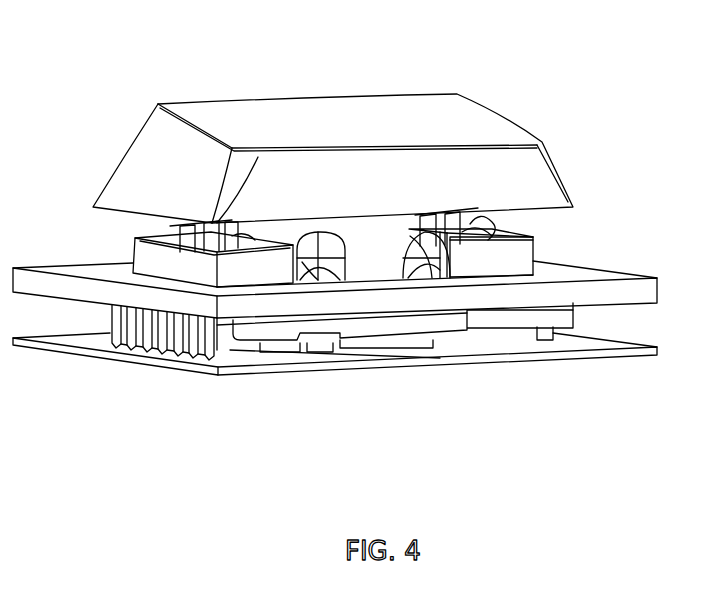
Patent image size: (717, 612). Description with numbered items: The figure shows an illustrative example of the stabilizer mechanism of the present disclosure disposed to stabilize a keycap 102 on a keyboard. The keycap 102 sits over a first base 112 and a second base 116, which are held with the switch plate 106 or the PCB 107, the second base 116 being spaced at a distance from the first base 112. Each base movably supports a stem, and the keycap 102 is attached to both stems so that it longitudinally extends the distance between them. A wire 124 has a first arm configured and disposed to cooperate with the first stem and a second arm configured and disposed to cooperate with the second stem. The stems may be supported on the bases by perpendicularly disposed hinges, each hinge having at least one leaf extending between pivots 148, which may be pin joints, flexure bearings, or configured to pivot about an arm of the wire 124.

The keycap 102 is at (330, 125).
The pivot 148 is at (160, 223).
The first base 112 is at (148, 260).
The second base 116 is at (520, 254).
The switch plate 106 is at (647, 290).
The PCB 107 is at (632, 366).
The wire 124 is at (398, 332).